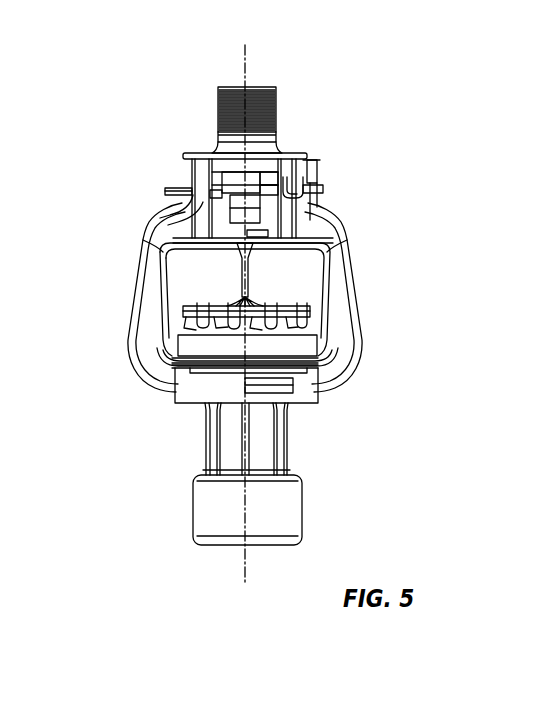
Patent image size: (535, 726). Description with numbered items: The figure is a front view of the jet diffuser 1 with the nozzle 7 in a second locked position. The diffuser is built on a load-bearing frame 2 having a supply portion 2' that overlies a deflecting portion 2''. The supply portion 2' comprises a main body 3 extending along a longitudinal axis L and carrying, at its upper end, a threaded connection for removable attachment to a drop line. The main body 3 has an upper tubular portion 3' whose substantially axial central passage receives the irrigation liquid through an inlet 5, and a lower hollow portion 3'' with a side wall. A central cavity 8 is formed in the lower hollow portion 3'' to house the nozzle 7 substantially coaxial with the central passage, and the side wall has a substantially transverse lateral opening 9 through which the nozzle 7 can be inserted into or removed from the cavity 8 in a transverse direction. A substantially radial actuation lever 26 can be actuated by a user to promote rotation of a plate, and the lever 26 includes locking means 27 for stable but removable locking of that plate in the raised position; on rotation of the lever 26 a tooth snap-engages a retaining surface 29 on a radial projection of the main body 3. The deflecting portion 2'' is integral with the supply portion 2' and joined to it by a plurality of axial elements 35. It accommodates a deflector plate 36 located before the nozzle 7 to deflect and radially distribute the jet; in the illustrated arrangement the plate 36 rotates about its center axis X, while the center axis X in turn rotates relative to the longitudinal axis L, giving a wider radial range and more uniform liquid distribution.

The jet diffuser 1 is at (423, 104).
The load-bearing frame 2 is at (201, 456).
The supply portion 2' is at (199, 50).
The deflecting portion 2'' is at (344, 437).
The main body 3 is at (286, 297).
The upper tubular portion 3' is at (266, 160).
The lower hollow portion 3'' is at (220, 137).
The inlet 5 is at (220, 82).
The nozzle 7 is at (170, 225).
The central cavity 8 is at (200, 172).
The lateral opening 9 is at (180, 205).
The actuation lever 26 is at (318, 163).
The locking means 27 is at (326, 180).
The retaining surface 29 is at (317, 200).
The axial elements 35 is at (138, 355).
The deflector plate 36 is at (325, 316).
The longitudinal axis L is at (245, 77).
The center axis X is at (245, 568).